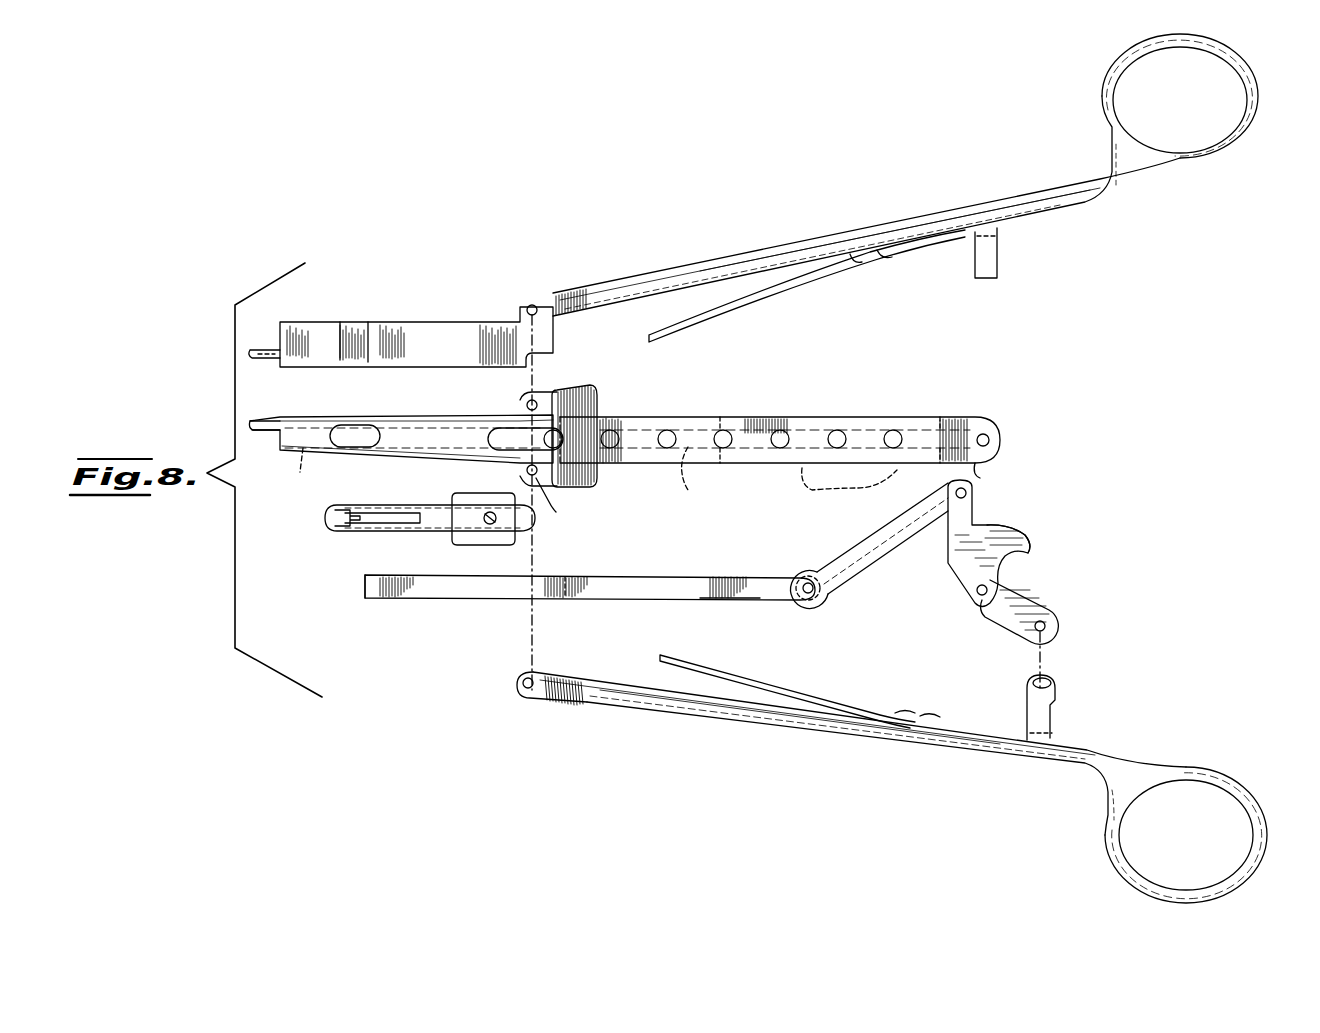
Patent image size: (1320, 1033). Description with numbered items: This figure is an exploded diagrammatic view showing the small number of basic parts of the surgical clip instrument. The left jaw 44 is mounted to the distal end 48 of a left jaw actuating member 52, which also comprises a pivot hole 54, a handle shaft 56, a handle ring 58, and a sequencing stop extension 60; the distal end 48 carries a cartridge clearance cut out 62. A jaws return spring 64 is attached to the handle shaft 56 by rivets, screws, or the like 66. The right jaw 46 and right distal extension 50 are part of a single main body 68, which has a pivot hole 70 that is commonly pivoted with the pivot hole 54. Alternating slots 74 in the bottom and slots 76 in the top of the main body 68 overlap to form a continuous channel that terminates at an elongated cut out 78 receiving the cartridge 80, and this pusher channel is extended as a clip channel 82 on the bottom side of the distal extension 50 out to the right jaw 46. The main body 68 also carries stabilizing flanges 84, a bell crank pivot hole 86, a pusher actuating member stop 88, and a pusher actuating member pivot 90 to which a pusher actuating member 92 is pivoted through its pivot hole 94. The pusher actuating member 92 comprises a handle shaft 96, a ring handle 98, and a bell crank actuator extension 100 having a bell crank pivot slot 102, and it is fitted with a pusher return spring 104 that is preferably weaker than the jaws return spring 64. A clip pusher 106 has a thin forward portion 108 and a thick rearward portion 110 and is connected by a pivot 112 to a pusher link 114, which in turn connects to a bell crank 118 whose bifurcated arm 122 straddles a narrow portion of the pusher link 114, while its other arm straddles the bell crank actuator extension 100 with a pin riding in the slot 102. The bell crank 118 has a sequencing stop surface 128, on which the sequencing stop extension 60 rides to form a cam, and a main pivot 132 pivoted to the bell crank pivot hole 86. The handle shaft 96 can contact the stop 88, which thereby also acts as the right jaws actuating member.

The left jaw 44 is at (256, 360).
The right jaw 46 is at (265, 432).
The distal end 48 is at (428, 322).
The right distal extension 50 is at (410, 420).
The left jaw actuating member 52 is at (648, 268).
The pivot hole 54 is at (527, 307).
The handle shaft 56 is at (740, 265).
The handle ring 58 is at (1250, 95).
The sequencing stop extension 60 is at (998, 258).
The cartridge clearance cut out 62 is at (358, 325).
The jaws return spring 64 is at (733, 310).
The rivets, screws, or the like 66 is at (884, 260).
The main body 68 is at (704, 410).
The pivot hole 70 is at (526, 403).
The slots 74 is at (789, 477).
The slots 76 is at (637, 428).
The elongated cut out 78 is at (418, 444).
The cartridge 80 is at (368, 540).
The clip channel 82 is at (300, 475).
The stabilizing flanges 84 is at (560, 385).
The bell crank pivot hole 86 is at (988, 435).
The pusher actuating member stop 88 is at (980, 478).
The pusher actuating member pivot 90 is at (548, 500).
The pusher actuating member 92 is at (968, 762).
The pivot hole 94 is at (525, 690).
The handle shaft 96 is at (672, 716).
The ring handle 98 is at (1222, 778).
The bell crank actuator extension 100 is at (1052, 716).
The bell crank pivot slot 102 is at (1052, 683).
The pusher return spring 104 is at (768, 690).
The clip pusher 106 is at (729, 572).
The thin forward portion 108 is at (448, 602).
The thick rearward portion 110 is at (750, 602).
The pivot 112 is at (810, 596).
The pusher link 114 is at (870, 542).
The bell crank 118 is at (944, 582).
The bifurcated arm 122 is at (966, 514).
The sequencing stop surface 128 is at (1012, 530).
The main pivot 132 is at (975, 595).